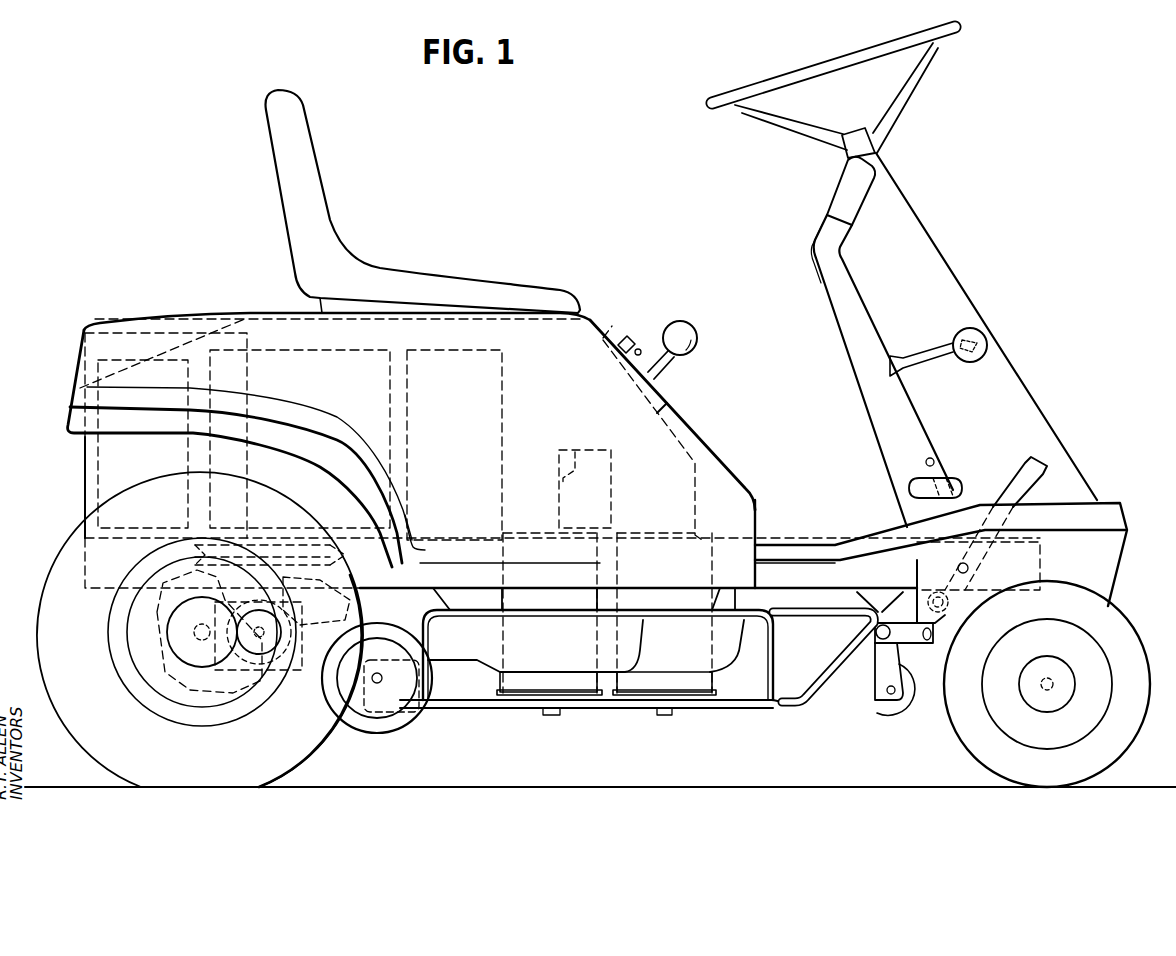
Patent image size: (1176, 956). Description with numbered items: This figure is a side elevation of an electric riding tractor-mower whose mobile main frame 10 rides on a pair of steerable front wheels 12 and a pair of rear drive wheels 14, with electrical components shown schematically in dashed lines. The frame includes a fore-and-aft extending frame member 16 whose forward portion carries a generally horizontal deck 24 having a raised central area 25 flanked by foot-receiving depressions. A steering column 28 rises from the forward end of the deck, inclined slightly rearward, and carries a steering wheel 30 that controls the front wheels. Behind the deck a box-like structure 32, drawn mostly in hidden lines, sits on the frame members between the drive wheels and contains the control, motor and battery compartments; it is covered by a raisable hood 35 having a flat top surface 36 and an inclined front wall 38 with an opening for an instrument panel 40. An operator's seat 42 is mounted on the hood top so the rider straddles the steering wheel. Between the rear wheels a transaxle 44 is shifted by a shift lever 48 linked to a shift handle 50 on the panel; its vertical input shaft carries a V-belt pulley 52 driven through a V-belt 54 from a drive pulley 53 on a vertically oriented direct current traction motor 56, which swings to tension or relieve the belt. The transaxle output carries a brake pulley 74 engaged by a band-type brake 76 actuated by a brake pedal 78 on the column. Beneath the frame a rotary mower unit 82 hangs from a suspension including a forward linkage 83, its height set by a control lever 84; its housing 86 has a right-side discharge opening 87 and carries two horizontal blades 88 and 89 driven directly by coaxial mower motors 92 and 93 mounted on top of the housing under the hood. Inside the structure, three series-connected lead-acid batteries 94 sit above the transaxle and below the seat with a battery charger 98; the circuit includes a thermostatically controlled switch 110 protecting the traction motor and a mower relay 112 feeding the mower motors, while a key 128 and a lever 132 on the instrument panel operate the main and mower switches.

The main frame 10 is at (74, 503).
The steerable front wheels 12 is at (1118, 607).
The rear drive wheels 14 is at (316, 735).
The fore-and-aft extending frame member 16 is at (888, 582).
The deck 24 is at (776, 547).
The raised central area 25 is at (813, 540).
The steering column 28 is at (1020, 383).
The steering wheel 30 is at (922, 82).
The box-like structure 32 is at (80, 445).
The hood 35 is at (192, 312).
The flat top surface 36 is at (276, 312).
The front wall 38 is at (710, 447).
The instrument panel 40 is at (662, 388).
The operator's seat 42 is at (405, 272).
The transaxle 44 is at (152, 684).
The shift lever 48 is at (348, 580).
The shift handle 50 is at (697, 337).
The V-belt pulley 52 is at (303, 542).
The drive pulley 53 is at (498, 572).
The V-belt 54 is at (412, 543).
The motor 56 is at (503, 412).
The brake pulley 74 is at (263, 686).
The band-type brake 76 is at (280, 668).
The brake pedal 78 is at (1010, 482).
The rotary mower unit 82 is at (797, 710).
The linkage 83 is at (925, 645).
The control lever 84 is at (851, 276).
The housing 86 is at (468, 612).
The discharge opening 87 is at (482, 692).
The blade 88 is at (605, 706).
The blade 89 is at (748, 708).
The mower motor 92 is at (555, 604).
The mower motor 93 is at (672, 604).
The lead-acid batteries 94 is at (247, 318).
The battery charger 98 is at (100, 357).
The thermostatically controlled switch 110 is at (558, 458).
The mower relay 112 is at (592, 451).
The key 128 is at (639, 348).
The lever 132 is at (625, 340).